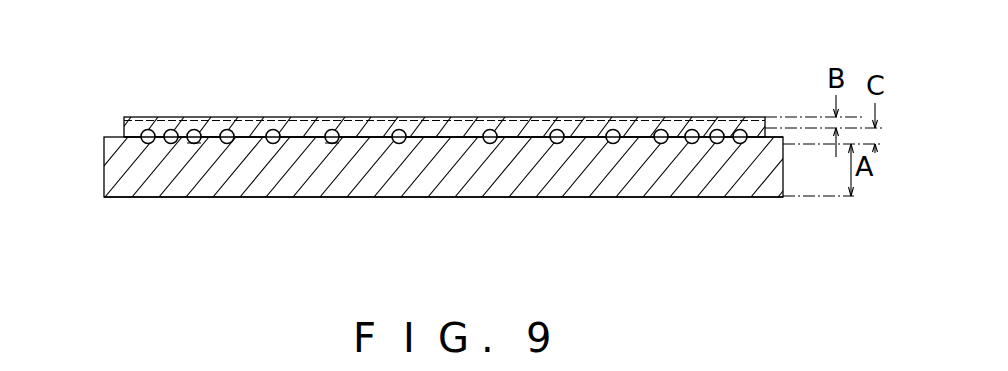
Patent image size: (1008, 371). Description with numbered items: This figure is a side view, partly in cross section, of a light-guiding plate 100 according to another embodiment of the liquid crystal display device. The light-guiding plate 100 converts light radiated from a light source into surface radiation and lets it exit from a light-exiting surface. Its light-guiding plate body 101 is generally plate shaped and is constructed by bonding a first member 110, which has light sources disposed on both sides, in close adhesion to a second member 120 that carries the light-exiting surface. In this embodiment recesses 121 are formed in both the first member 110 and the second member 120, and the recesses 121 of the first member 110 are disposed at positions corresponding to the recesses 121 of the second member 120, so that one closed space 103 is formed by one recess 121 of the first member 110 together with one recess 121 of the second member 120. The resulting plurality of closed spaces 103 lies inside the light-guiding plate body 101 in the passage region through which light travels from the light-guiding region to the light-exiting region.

The light-guiding plate 100 is at (728, 96).
The light-guiding plate body 101 is at (104, 198).
The first member 110 is at (107, 137).
The second member 120 is at (123, 130).
The recesses 121 is at (214, 118).
The closed spaces 103 is at (197, 144).